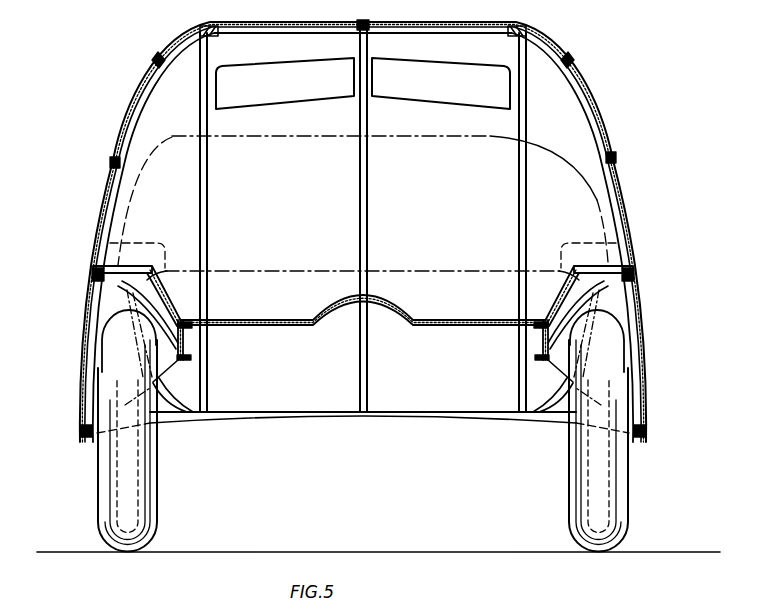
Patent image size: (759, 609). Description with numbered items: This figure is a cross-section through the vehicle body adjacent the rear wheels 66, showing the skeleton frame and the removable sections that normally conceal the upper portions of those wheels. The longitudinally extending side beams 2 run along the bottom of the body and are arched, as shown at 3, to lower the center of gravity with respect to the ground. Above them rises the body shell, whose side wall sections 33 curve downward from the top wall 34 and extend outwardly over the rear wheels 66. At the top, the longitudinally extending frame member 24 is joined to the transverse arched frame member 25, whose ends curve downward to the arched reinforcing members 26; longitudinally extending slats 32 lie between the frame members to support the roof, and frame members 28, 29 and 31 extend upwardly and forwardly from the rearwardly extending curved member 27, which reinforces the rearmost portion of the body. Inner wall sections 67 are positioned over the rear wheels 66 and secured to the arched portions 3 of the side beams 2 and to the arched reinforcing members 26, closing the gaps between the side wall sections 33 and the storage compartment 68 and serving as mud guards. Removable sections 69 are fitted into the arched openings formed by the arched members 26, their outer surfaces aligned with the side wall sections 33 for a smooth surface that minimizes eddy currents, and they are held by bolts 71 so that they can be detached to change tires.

The side beam 2 is at (186, 344).
The arched portion 3 is at (189, 360).
The longitudinally extending frame member 24 is at (156, 60).
The arched frame member 25 is at (260, 33).
The arched reinforcing member 26 is at (97, 270).
The rearwardly extending curved member 27 is at (318, 416).
The frame member 28 is at (120, 163).
The frame member 29 is at (203, 100).
The frame member 31 is at (364, 117).
The longitudinally extending slat 32 is at (213, 33).
The side wall section 33 is at (101, 212).
The top wall 34 is at (433, 32).
The rear wheel 66 is at (110, 495).
The inner wall section 67 is at (153, 307).
The storage compartment 68 is at (541, 166).
The removable section 69 is at (86, 315).
The bolt 71 is at (96, 283).